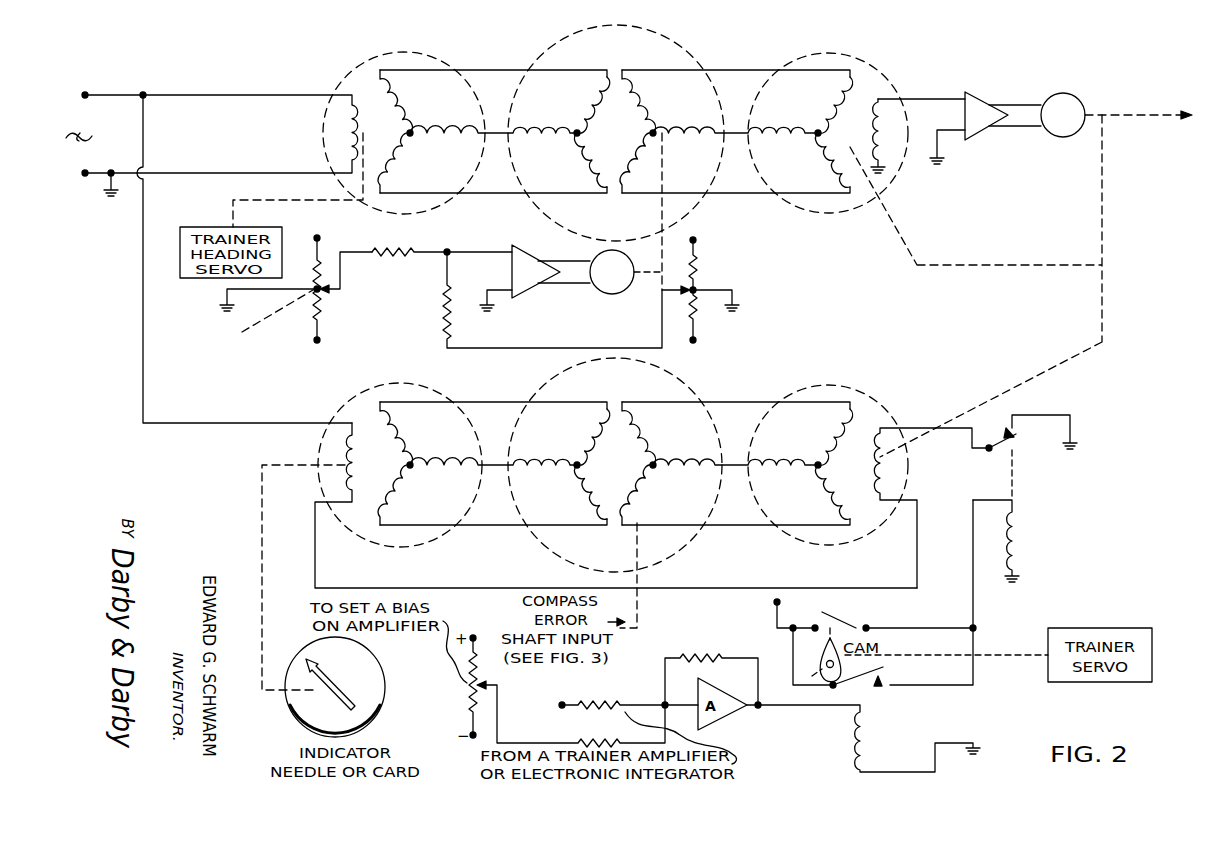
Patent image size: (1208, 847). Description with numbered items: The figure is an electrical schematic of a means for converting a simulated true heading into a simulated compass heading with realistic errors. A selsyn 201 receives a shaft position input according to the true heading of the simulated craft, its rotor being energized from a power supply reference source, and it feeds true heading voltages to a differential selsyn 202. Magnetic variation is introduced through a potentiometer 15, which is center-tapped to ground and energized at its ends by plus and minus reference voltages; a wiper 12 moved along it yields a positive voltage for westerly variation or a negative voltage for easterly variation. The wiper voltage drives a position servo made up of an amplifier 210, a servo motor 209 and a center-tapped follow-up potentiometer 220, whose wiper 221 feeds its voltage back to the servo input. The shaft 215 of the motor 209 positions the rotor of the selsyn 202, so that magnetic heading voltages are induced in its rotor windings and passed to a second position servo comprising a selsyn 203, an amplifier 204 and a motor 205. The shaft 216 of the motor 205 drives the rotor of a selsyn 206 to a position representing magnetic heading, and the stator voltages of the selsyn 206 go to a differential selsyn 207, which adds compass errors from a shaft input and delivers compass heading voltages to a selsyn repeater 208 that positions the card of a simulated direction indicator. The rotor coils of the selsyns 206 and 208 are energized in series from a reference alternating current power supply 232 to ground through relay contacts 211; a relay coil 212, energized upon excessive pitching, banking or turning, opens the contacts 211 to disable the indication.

The wiper 12 is at (332, 290).
The potentiometer 15 is at (314, 306).
The selsyn 201 is at (358, 64).
The differential selsyn 202 is at (567, 46).
The selsyn 203 is at (789, 64).
The amplifier 204 is at (971, 96).
The motor 205 is at (1038, 97).
The selsyn 206 is at (849, 388).
The differential selsyn 207 is at (708, 384).
The selsyn repeater 208 is at (425, 390).
The servo motor 209 is at (612, 250).
The amplifier 210 is at (527, 250).
The relay contacts 211 is at (1016, 444).
The relay coil 212 is at (1014, 546).
The shaft 215 is at (650, 236).
The shaft 216 is at (1102, 236).
The follow-up potentiometer 220 is at (700, 279).
The wiper 221 is at (708, 310).
The reference alternating current power supply 232 is at (84, 94).